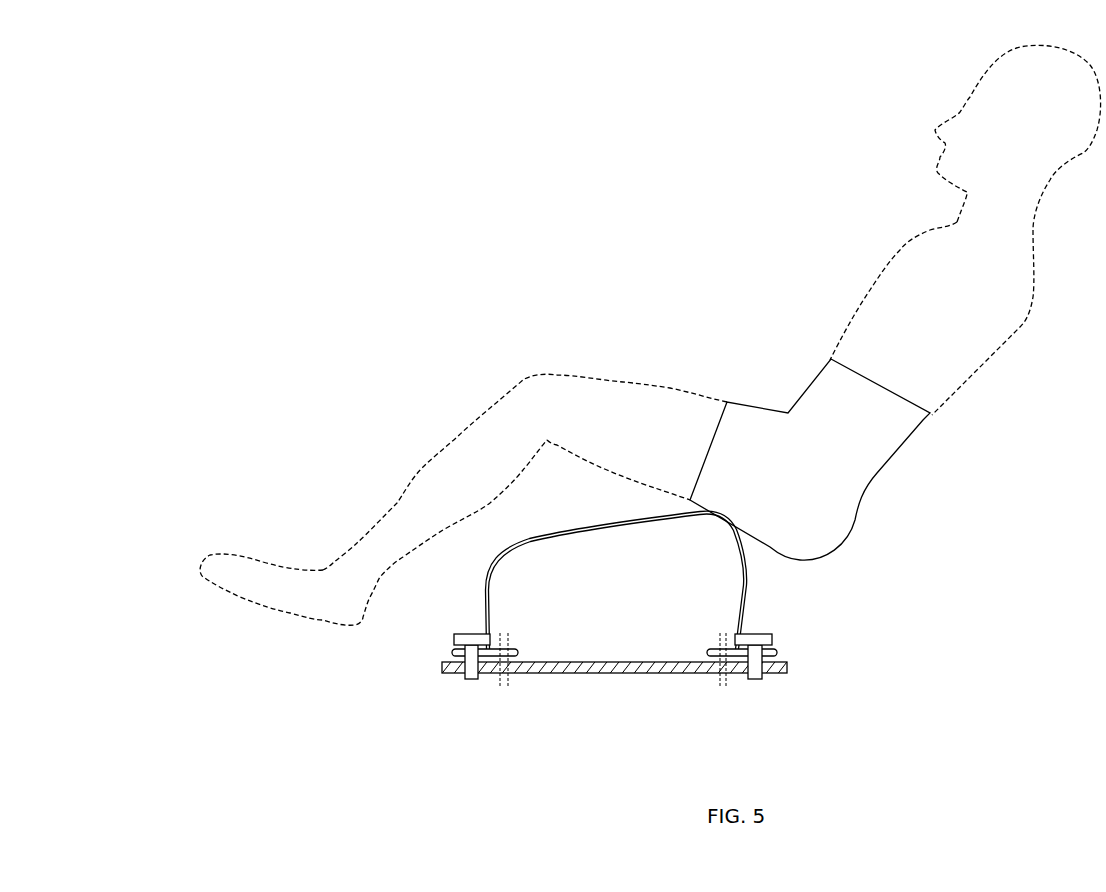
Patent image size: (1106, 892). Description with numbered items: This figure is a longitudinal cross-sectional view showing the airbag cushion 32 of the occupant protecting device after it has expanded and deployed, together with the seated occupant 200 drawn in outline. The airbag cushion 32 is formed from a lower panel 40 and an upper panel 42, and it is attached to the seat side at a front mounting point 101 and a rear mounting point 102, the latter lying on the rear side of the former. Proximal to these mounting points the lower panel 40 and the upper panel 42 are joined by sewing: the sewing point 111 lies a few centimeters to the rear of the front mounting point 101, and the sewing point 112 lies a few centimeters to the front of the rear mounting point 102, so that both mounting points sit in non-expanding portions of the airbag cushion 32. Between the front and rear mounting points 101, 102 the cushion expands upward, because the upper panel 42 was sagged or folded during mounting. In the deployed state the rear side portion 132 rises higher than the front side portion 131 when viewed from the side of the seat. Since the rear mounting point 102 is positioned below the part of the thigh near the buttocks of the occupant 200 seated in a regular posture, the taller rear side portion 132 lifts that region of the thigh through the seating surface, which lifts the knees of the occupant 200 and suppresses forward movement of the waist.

The occupant 200 is at (980, 332).
The lower panel 40 is at (603, 675).
The airbag cushion 32 is at (546, 536).
The upper panel 42 is at (598, 530).
The front side portion 131 is at (483, 601).
The rear side portion 132 is at (746, 588).
The front mounting point 101 is at (456, 676).
The rear mounting point 102 is at (773, 679).
The sewing point 111 is at (513, 683).
The sewing point 112 is at (715, 686).